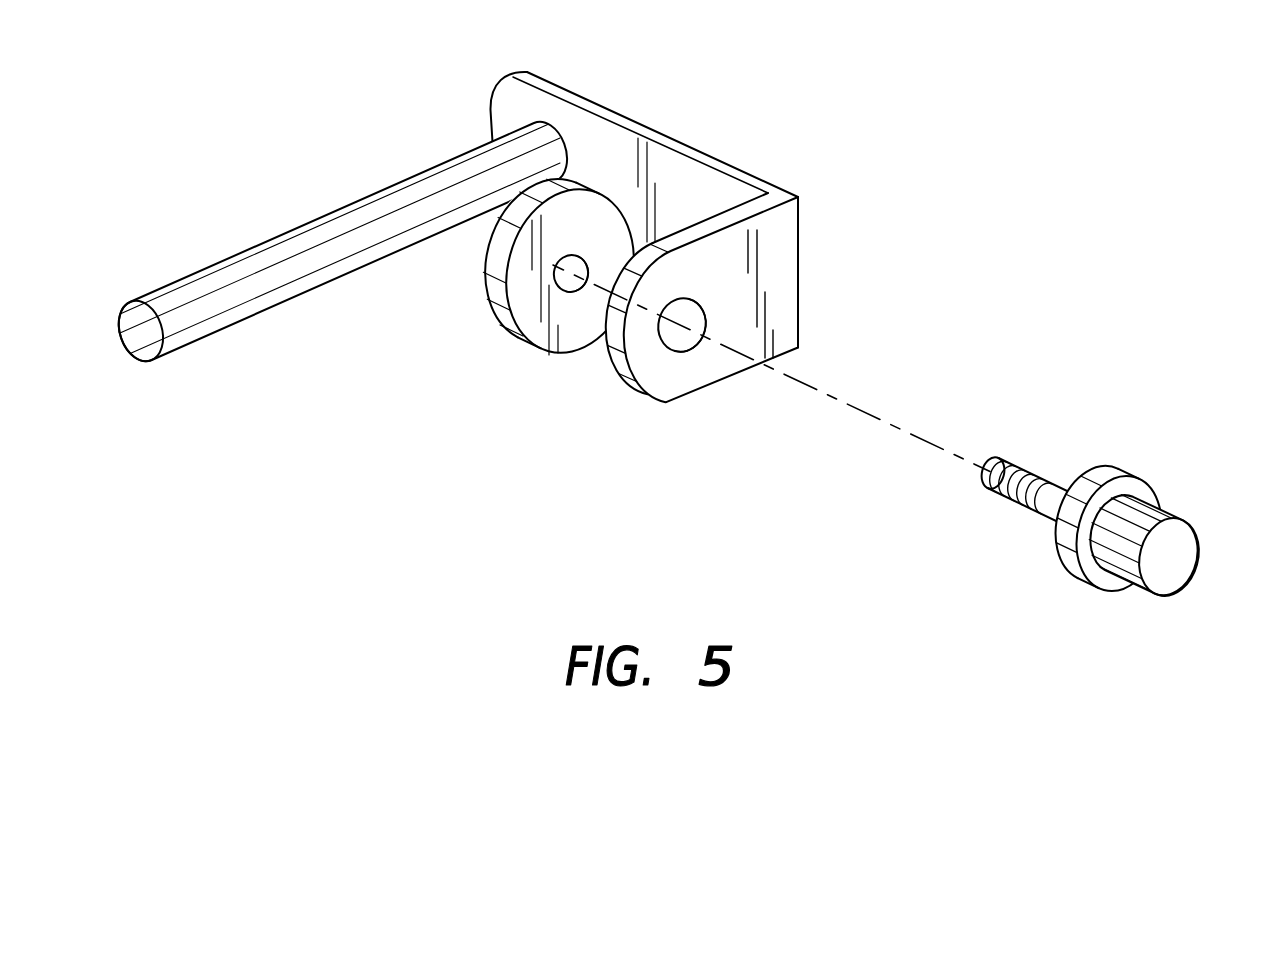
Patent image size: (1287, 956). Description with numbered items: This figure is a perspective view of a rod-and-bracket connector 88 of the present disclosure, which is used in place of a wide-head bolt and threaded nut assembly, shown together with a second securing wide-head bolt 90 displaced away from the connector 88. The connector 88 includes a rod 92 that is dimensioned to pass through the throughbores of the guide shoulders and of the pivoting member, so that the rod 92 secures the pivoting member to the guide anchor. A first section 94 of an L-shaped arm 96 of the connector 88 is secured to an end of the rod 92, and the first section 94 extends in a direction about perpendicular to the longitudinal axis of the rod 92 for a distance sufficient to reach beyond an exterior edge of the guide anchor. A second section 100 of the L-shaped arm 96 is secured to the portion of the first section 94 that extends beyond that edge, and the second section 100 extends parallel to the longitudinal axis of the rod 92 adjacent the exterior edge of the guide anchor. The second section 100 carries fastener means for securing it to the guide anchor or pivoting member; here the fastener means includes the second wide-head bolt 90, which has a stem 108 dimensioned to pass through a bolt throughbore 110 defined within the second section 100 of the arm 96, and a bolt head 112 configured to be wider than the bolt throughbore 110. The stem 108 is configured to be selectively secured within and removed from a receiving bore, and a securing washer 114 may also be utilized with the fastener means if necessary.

The rod-and-bracket connector 88 is at (523, 241).
The second securing wide-head bolt 90 is at (1132, 529).
The rod 92 is at (283, 235).
The first section 94 is at (748, 173).
The L-shaped arm 96 is at (812, 267).
The second section 100 is at (740, 320).
The stem 108 is at (1018, 463).
The bolt throughbore 110 is at (668, 347).
The bolt head 112 is at (1142, 478).
The securing washer 114 is at (528, 350).